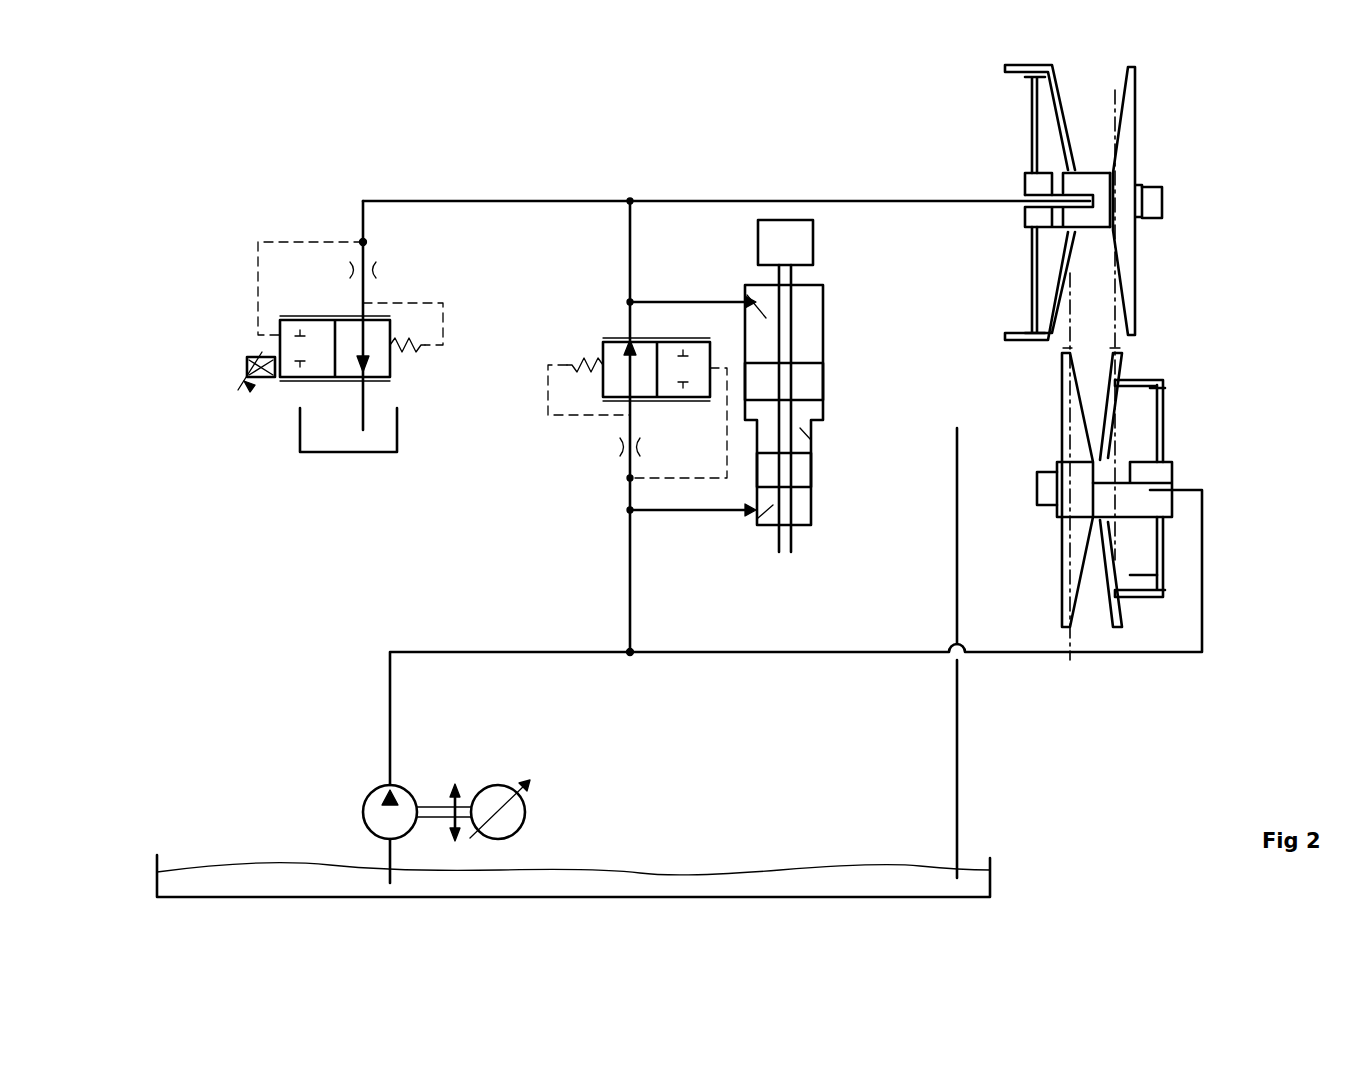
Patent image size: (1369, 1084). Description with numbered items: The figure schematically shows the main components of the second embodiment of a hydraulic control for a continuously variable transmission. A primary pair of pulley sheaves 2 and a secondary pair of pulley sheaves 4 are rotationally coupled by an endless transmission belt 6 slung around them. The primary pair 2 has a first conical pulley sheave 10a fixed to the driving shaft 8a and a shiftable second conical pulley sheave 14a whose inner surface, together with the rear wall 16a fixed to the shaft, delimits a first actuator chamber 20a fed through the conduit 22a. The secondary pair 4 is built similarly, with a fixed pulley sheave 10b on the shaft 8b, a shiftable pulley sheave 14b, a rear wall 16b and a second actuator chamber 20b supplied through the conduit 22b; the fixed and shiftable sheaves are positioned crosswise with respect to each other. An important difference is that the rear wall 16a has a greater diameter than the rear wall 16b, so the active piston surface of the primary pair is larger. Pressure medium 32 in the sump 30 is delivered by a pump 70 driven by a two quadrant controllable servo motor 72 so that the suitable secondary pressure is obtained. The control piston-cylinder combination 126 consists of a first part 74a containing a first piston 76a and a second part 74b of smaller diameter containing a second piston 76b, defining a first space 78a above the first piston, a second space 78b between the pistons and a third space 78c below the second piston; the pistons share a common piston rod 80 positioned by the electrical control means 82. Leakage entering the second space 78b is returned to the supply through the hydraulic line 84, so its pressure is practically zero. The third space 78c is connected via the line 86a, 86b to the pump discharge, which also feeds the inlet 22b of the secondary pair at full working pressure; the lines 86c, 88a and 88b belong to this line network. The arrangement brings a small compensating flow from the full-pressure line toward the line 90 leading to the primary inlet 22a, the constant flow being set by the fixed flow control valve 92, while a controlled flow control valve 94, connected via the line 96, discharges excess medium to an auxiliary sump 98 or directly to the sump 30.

The primary pair of pulley sheaves 2 is at (1196, 202).
The secondary pair of pulley sheaves 4 is at (1212, 515).
The endless transmission belt 6 is at (1103, 342).
The driving shaft 8a is at (1162, 197).
The shaft 8b is at (1035, 488).
The first conical pulley sheave 10a is at (1128, 148).
The fixed pulley sheave 10b is at (1077, 448).
The second conical pulley sheave 14a is at (1060, 100).
The shiftable pulley sheave 14b is at (1120, 630).
The rear wall 16a is at (1030, 165).
The rear wall 16b is at (1165, 417).
The first actuator chamber 20a is at (1043, 128).
The second actuator chamber 20b is at (1145, 580).
The conduit 22a is at (1058, 200).
The conduit 22b is at (1175, 483).
The sump 30 is at (990, 878).
The pressure medium 32 is at (800, 873).
The pump 70 is at (358, 806).
The two quadrant controllable servo motor 72 is at (523, 808).
The first part 74a is at (826, 323).
The second part 74b is at (815, 512).
The first piston 76a is at (802, 385).
The second piston 76b is at (792, 473).
The first space 78a is at (760, 292).
The second space 78b is at (805, 432).
The third space 78c is at (770, 530).
The common piston rod 80 is at (805, 281).
The electrical control means 82 is at (788, 235).
The hydraulic line 84 is at (950, 590).
The line 86a is at (628, 595).
The line 86b is at (528, 654).
The supply line to second pulley 86c is at (842, 654).
The first branch line 88a is at (700, 300).
The second branch line 88b is at (705, 512).
The line 90 is at (878, 200).
The flow control valve 92 is at (605, 345).
The controlled flow control valve 94 is at (258, 360).
The line 96 is at (545, 200).
The auxiliary sump 98 is at (388, 440).
The control piston-cylinder combination 126 is at (860, 394).